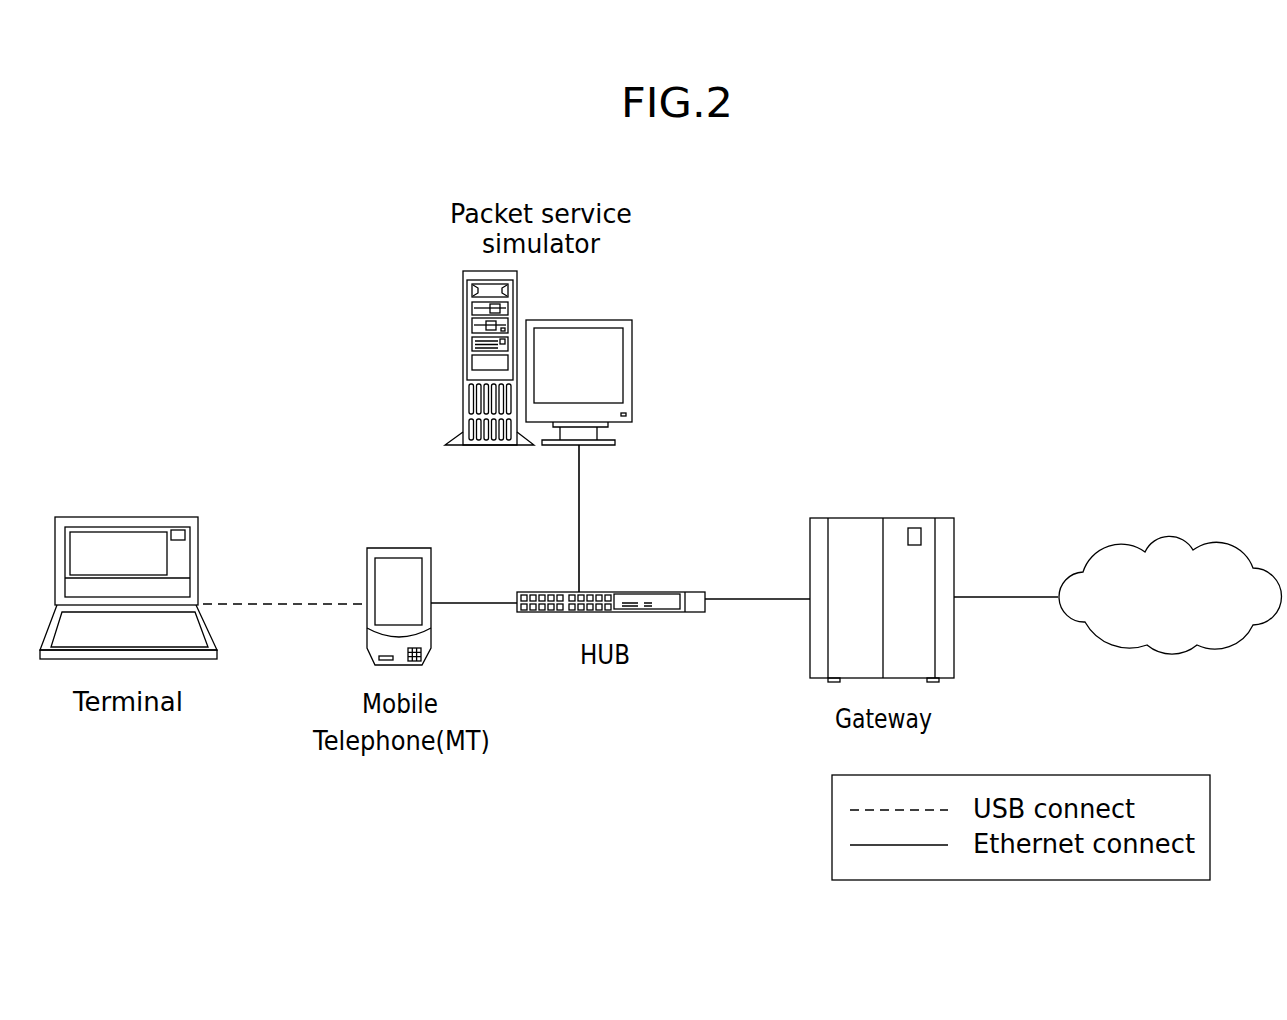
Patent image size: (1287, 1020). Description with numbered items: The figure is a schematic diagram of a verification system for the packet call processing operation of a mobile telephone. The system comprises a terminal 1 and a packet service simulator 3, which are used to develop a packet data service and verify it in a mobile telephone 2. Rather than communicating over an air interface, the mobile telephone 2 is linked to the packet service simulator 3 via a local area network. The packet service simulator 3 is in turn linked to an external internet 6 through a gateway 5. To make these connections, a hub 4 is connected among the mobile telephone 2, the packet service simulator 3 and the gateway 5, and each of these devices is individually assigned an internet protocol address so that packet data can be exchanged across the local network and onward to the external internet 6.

The terminal 1 is at (127, 517).
The mobile telephone 2 is at (393, 548).
The packet service simulator 3 is at (633, 335).
The hub 4 is at (665, 592).
The gateway 5 is at (862, 518).
The external internet 6 is at (1168, 537).